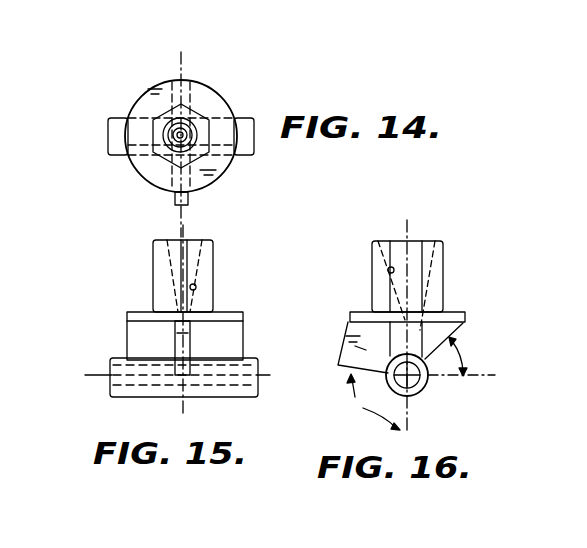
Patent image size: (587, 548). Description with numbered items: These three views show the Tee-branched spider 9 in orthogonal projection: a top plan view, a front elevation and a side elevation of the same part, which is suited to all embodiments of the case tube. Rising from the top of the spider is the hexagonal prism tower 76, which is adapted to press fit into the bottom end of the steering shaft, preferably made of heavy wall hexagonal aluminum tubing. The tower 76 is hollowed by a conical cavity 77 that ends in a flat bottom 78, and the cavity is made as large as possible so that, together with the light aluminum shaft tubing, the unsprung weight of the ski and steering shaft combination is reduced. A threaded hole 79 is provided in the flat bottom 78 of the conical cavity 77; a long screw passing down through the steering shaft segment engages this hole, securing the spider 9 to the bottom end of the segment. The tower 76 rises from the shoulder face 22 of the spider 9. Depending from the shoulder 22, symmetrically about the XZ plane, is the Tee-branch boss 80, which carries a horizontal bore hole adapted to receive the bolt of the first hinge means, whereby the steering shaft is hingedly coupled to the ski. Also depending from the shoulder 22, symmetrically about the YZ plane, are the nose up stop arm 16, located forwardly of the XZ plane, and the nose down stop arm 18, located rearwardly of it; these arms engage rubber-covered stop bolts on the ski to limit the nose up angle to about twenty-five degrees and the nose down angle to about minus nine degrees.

In FIG. 14, the spider 9 is at (246, 90).
In FIG. 15, the spider 9 is at (92, 393).
In FIG. 16, the spider 9 is at (474, 270).
In FIG. 14, the nose up stop arm 16 is at (188, 202).
In FIG. 16, the nose up stop arm 16 is at (346, 368).
In FIG. 14, the nose down stop arm 18 is at (188, 90).
In FIG. 16, the nose down stop arm 18 is at (463, 328).
In FIG. 14, the shoulder face 22 is at (160, 95).
In FIG. 16, the shoulder face 22 is at (457, 312).
In FIG. 14, the hexagonal prism tower 76 is at (163, 118).
In FIG. 15, the hexagonal prism tower 76 is at (205, 268).
In FIG. 16, the hexagonal prism tower 76 is at (372, 253).
In FIG. 14, the conical cavity 77 is at (203, 112).
In FIG. 15, the conical cavity 77 is at (197, 288).
In FIG. 16, the conical cavity 77 is at (387, 270).
In FIG. 14, the flat bottom 78 is at (173, 145).
In FIG. 15, the flat bottom 78 is at (178, 312).
In FIG. 16, the flat bottom 78 is at (373, 305).
In FIG. 14, the threaded hole 79 is at (178, 143).
In FIG. 15, the threaded hole 79 is at (175, 330).
In FIG. 16, the threaded hole 79 is at (397, 335).
In FIG. 14, the Tee-branch boss 80 is at (253, 117).
In FIG. 15, the Tee-branch boss 80 is at (255, 359).
In FIG. 16, the Tee-branch boss 80 is at (423, 380).